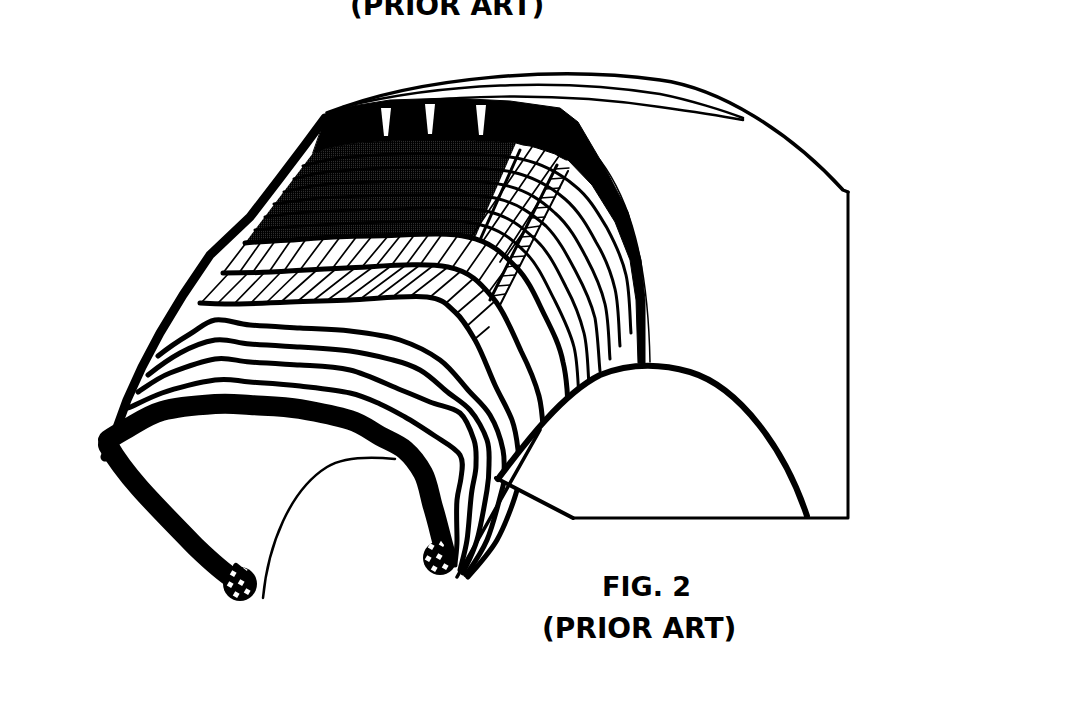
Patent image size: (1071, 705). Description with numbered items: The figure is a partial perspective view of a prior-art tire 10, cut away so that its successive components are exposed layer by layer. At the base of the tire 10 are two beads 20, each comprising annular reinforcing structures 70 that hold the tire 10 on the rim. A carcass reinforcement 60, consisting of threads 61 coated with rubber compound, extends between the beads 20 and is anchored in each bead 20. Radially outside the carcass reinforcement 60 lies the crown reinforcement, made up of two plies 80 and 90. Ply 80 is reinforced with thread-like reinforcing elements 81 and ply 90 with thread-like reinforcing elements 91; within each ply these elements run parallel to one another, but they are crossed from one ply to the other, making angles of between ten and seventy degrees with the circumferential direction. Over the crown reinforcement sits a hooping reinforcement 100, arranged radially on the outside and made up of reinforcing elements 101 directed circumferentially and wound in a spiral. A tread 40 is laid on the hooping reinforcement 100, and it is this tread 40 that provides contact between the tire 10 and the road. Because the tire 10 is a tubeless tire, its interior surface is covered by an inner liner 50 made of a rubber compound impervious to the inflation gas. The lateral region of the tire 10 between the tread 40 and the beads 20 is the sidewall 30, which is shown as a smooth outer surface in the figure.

The tire 10 is at (779, 66).
The beads 20 is at (183, 592).
The sidewall portion 30 is at (673, 260).
The tread 40 is at (373, 103).
The inner liner 50 is at (236, 482).
The carcass reinforcement 60 is at (72, 297).
The threads 61 is at (190, 351).
The annular reinforcing structures 70 is at (425, 560).
The ply 80 is at (105, 285).
The thread-like reinforcing elements 81 is at (237, 286).
The ply 90 is at (117, 127).
The thread-like reinforcing elements 91 is at (252, 242).
The hooping reinforcement 100 is at (173, 40).
The reinforcing elements 101 is at (335, 182).